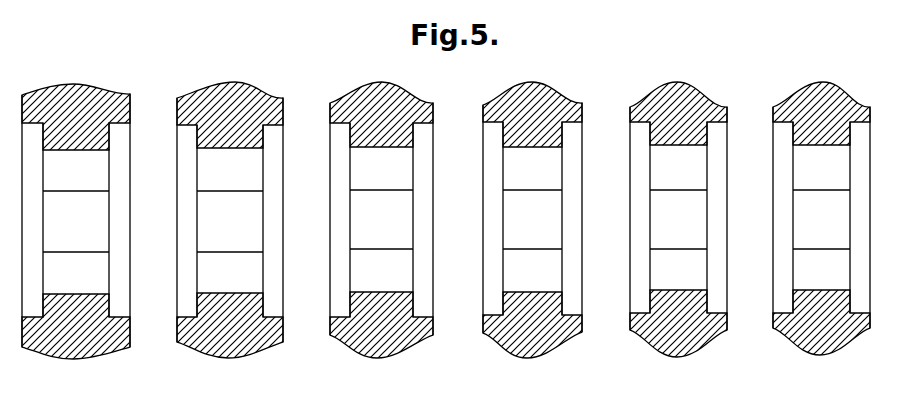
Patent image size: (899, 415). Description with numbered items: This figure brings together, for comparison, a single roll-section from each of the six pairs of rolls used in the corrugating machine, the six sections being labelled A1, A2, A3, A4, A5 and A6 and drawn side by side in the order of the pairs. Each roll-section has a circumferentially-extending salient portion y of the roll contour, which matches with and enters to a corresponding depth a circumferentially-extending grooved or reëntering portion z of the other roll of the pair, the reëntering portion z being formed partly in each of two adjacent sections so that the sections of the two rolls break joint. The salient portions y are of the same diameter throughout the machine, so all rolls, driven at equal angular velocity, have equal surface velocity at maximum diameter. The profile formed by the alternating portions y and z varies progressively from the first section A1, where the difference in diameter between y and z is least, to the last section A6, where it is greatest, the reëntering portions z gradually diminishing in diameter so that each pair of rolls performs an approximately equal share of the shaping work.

The first mould block A1 is at (76, 208).
The second mould block A2 is at (230, 208).
The third mould block A3 is at (381, 208).
The fourth mould block A4 is at (532, 208).
The fifth mould block A5 is at (678, 207).
The sixth mould block A6 is at (821, 206).
The salient portion y is at (73, 359).
The reëntering portion z is at (177, 343).